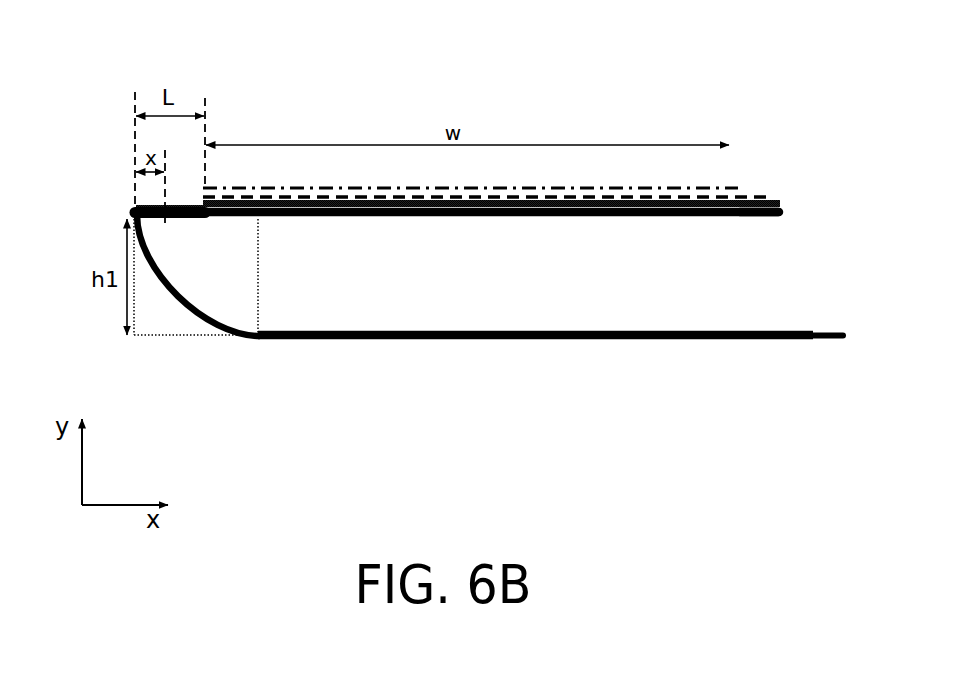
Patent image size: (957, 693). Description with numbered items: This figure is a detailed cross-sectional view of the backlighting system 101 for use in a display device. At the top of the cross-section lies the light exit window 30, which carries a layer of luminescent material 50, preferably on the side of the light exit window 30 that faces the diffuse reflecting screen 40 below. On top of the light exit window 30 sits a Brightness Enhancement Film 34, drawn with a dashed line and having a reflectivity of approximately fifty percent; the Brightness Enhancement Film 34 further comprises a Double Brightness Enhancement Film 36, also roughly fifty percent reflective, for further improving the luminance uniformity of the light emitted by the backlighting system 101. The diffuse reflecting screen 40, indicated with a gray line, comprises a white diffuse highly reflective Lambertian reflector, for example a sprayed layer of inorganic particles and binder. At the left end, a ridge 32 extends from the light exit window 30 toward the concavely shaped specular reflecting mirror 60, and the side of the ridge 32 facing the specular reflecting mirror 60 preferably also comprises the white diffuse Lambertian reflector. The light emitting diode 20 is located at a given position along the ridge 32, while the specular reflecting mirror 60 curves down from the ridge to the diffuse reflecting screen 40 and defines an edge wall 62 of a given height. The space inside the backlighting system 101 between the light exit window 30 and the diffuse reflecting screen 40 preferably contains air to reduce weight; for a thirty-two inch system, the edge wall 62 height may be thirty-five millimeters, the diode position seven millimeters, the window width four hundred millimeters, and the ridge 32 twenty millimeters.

The backlighting system 101 is at (803, 48).
The light emitting diode 20 is at (172, 221).
The light exit window 30 is at (453, 217).
The ridge 32 is at (149, 205).
The Brightness Enhancement Film 34 is at (768, 196).
The Double Brightness Enhancement Film 36 is at (736, 186).
The diffuse reflecting screen 40 is at (557, 329).
The layer of luminescent material 50 is at (733, 217).
The specular reflecting mirror 60 is at (209, 310).
The edge wall 62 is at (187, 318).